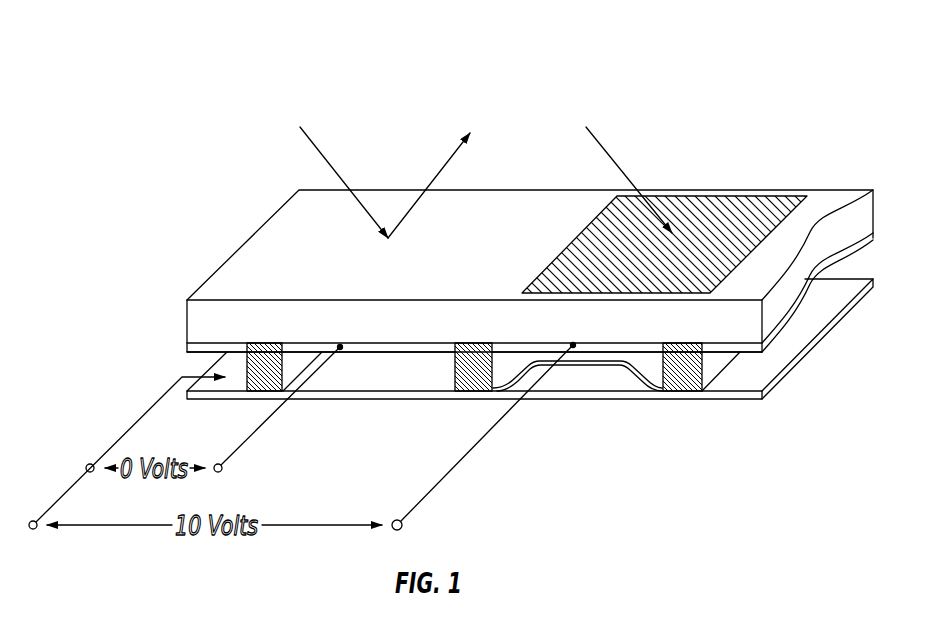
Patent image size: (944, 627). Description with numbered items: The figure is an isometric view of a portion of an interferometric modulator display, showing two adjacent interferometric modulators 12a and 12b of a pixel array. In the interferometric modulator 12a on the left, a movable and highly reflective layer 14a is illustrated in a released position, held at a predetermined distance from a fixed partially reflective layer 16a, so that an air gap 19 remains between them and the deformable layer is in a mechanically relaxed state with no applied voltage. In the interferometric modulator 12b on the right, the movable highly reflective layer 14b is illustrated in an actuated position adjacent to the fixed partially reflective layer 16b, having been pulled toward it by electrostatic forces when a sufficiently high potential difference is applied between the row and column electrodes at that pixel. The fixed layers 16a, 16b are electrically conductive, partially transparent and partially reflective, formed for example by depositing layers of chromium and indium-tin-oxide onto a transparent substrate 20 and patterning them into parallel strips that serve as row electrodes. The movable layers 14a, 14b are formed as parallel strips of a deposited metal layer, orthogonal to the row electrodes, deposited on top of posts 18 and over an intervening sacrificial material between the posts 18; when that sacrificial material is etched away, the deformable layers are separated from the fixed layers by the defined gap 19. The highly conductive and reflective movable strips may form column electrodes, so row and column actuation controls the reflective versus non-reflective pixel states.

The interferometric modulator 12a is at (295, 255).
The interferometric modulator 12b is at (725, 220).
The movable reflective layer 14a is at (300, 393).
The movable reflective layer 14b is at (522, 373).
The fixed partially reflective layer 16a is at (365, 348).
The fixed partially reflective layer 16b is at (550, 347).
The posts 18 is at (265, 382).
The air gap 19 is at (407, 373).
The transparent substrate 20 is at (803, 260).